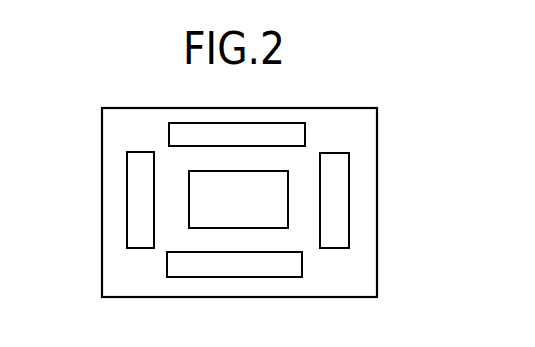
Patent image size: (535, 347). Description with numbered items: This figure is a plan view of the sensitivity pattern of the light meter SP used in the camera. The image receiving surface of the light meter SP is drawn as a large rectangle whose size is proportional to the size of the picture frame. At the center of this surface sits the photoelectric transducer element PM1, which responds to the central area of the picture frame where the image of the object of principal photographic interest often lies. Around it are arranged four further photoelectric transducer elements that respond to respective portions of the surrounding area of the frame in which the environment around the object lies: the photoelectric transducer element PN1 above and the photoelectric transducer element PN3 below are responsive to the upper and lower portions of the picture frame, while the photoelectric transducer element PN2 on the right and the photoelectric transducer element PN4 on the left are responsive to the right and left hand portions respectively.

The light meter SP is at (378, 163).
The photoelectric transducer element PM1 is at (238, 199).
The photoelectric transducer element PN1 is at (237, 135).
The photoelectric transducer element PN2 is at (340, 216).
The photoelectric transducer element PN3 is at (234, 264).
The photoelectric transducer element PN4 is at (131, 193).